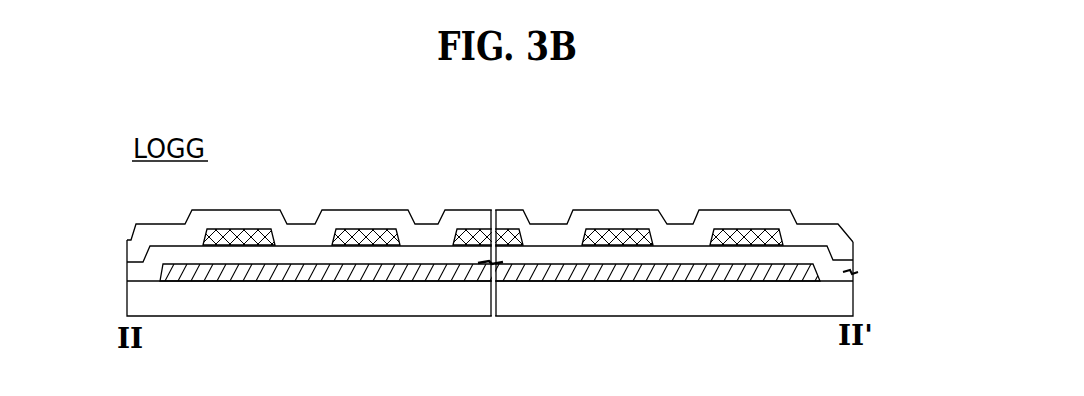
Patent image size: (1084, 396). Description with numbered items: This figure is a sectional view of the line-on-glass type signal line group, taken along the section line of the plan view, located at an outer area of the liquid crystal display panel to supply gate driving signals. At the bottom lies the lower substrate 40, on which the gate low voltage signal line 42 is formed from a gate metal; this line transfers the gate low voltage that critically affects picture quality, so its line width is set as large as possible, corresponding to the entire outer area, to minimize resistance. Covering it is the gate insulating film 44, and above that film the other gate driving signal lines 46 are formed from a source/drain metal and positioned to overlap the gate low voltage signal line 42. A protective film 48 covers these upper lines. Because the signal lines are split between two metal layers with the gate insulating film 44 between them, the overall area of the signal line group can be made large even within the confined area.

The lower substrate 40 is at (847, 304).
The gate low voltage signal line 42 is at (535, 272).
The gate insulating film 44 is at (853, 263).
The gate driving signal lines 46 is at (490, 228).
The protective film 48 is at (844, 252).